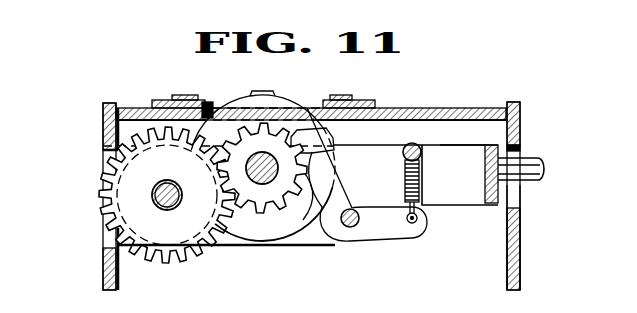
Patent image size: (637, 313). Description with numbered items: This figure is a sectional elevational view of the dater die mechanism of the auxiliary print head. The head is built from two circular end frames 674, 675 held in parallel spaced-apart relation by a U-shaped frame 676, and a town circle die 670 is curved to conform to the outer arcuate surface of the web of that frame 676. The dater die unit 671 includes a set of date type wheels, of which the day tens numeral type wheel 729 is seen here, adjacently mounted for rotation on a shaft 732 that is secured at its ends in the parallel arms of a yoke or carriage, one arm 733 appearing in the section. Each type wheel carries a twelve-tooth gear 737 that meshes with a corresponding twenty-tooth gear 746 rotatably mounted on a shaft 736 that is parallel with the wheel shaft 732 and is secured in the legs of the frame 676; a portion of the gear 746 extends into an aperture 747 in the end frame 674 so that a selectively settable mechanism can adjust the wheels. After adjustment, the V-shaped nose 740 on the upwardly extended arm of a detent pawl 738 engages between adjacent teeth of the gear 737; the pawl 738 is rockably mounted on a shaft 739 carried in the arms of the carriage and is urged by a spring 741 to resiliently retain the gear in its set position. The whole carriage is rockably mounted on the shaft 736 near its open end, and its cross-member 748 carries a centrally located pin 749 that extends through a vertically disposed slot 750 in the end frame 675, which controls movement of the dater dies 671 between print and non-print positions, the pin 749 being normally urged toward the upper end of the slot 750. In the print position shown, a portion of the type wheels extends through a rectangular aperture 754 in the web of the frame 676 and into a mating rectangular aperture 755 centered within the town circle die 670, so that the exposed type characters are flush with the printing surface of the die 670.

The town circle die 670 is at (355, 100).
The dater die unit 671 is at (278, 98).
The end frame 674 is at (107, 103).
The end frame 675 is at (513, 102).
The U-shaped frame 676 is at (431, 109).
The day tens numeral type wheel 729 is at (287, 232).
The shaft 732 is at (265, 186).
The arm 733 is at (440, 188).
The shaft 736 is at (172, 209).
The twelve-tooth gear 737 is at (311, 202).
The detent pawl 738 is at (347, 240).
The shaft 739 is at (353, 212).
The V-shaped nose 740 is at (336, 152).
The spring 741 is at (420, 174).
The twenty-tooth gear 746 is at (125, 196).
The aperture 747 is at (104, 150).
The cross-member 748 is at (478, 148).
The pin 749 is at (532, 163).
The slot 750 is at (523, 205).
The rectangular aperture 754 is at (206, 101).
The rectangular aperture 755 is at (214, 104).